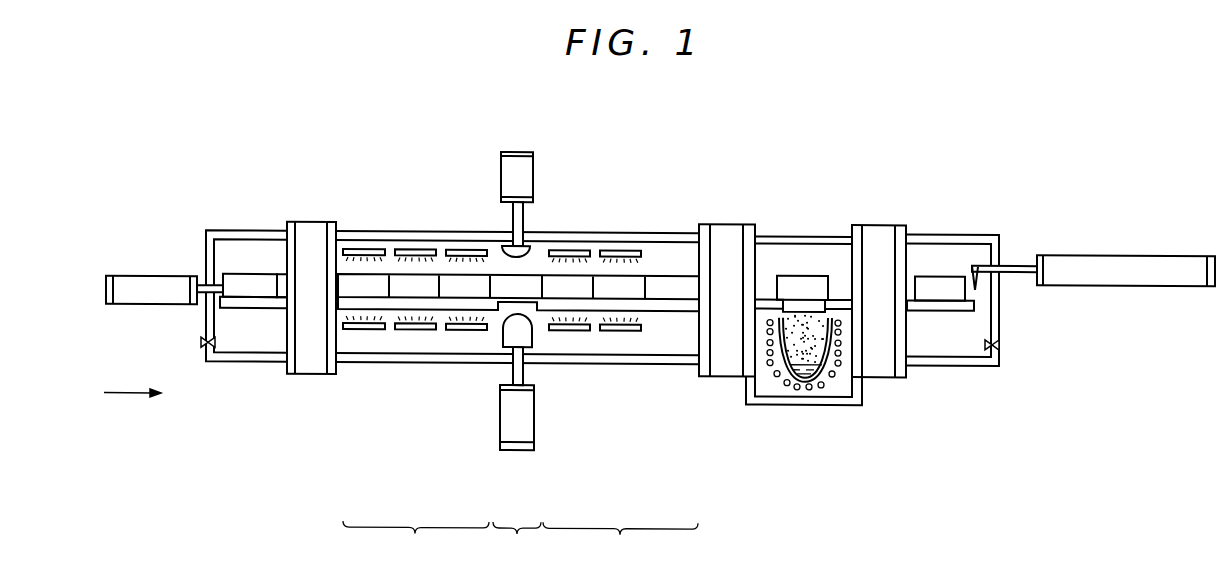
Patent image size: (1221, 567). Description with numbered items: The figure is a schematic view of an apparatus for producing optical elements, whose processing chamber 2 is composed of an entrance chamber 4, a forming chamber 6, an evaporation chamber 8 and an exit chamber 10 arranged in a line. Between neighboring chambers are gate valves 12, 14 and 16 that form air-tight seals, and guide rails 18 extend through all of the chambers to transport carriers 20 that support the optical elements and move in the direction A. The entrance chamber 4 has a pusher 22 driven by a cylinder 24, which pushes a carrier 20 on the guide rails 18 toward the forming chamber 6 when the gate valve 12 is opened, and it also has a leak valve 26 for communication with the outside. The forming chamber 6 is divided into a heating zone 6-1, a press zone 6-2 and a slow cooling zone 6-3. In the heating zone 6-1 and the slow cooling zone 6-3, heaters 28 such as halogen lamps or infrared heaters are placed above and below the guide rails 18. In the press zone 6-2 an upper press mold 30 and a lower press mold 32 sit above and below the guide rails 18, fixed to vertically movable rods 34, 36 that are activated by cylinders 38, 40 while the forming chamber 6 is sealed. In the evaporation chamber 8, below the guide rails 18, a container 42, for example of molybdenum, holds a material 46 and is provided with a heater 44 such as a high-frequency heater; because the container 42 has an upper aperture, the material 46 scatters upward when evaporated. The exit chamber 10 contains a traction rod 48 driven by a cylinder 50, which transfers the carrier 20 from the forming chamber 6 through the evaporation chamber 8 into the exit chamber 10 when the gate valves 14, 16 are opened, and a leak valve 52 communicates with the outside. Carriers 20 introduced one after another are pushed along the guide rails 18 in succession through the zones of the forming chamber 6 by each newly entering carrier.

The processing chamber 2 is at (657, 150).
The entrance chamber 4 is at (245, 222).
The forming chamber 6 is at (422, 220).
The heating zone 6-1 is at (416, 541).
The press zone 6-2 is at (517, 541).
The slow cooling zone 6-3 is at (620, 542).
The evaporation chamber 8 is at (793, 218).
The exit chamber 10 is at (944, 219).
The gate valve 12 is at (311, 240).
The gate valve 14 is at (724, 238).
The gate valve 16 is at (878, 236).
The guide rails 18 is at (252, 310).
The carriers 20 is at (241, 275).
The pusher 22 is at (200, 287).
The cylinder 24 is at (155, 286).
The leak valve 26 is at (201, 344).
The heaters 28 is at (412, 250).
The upper press mold 30 is at (500, 250).
The lower press mold 32 is at (532, 331).
The vertically movable rod 34 is at (523, 216).
The vertically movable rod 36 is at (513, 376).
The cylinder 38 is at (527, 170).
The cylinder 40 is at (532, 416).
The container 42 is at (797, 381).
The heater 44 is at (820, 382).
The material 46 is at (826, 366).
The traction rod 48 is at (970, 266).
The cylinder 50 is at (1115, 257).
The leak valve 52 is at (1000, 342).